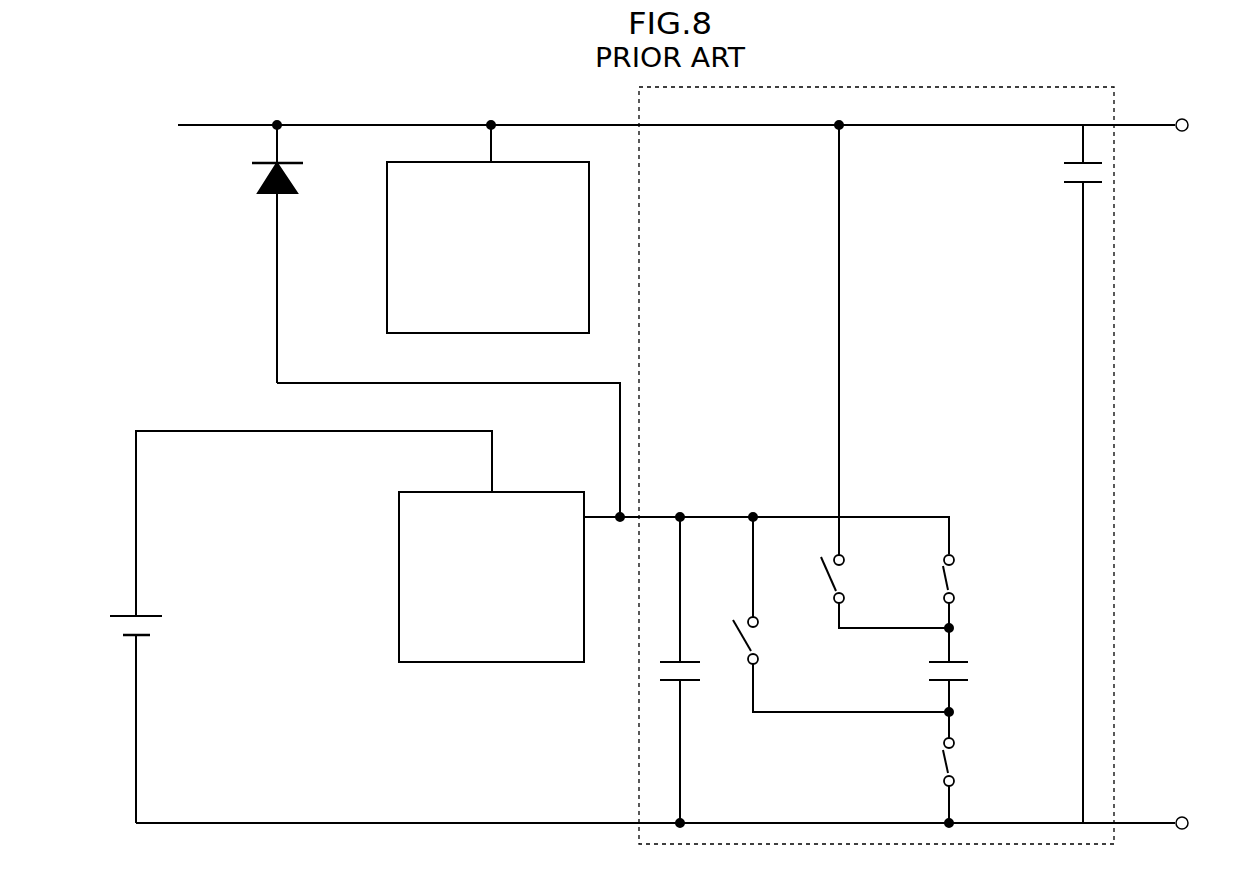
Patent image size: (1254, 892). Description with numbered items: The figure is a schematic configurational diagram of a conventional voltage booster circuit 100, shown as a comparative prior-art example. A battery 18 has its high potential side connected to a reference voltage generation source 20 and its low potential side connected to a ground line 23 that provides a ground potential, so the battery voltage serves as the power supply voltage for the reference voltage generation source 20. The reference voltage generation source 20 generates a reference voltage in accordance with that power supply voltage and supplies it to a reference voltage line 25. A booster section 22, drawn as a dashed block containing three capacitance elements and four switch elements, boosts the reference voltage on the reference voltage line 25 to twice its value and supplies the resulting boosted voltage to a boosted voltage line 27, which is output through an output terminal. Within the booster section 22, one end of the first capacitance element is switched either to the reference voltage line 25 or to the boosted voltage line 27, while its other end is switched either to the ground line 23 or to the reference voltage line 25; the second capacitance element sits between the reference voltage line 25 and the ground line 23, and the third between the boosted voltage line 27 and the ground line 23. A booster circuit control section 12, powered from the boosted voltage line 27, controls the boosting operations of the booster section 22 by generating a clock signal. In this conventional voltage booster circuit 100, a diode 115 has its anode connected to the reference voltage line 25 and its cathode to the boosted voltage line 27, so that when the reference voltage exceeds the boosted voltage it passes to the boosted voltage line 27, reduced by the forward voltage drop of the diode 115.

The conventional voltage booster circuit 100 is at (136, 213).
The diode 115 is at (258, 205).
The boosted voltage line 27 is at (543, 125).
The booster circuit control section 12 is at (589, 228).
The booster section 22 is at (1114, 283).
The reference voltage generation source 20 is at (517, 492).
The reference voltage line 25 is at (715, 517).
The battery 18 is at (116, 600).
The ground line 23 is at (407, 823).